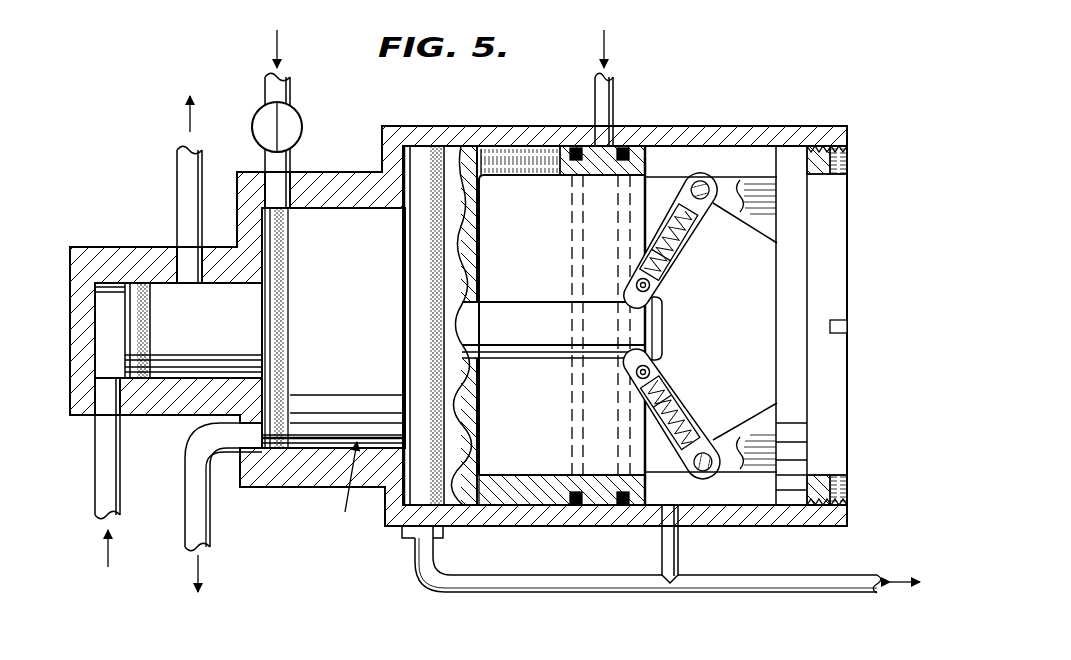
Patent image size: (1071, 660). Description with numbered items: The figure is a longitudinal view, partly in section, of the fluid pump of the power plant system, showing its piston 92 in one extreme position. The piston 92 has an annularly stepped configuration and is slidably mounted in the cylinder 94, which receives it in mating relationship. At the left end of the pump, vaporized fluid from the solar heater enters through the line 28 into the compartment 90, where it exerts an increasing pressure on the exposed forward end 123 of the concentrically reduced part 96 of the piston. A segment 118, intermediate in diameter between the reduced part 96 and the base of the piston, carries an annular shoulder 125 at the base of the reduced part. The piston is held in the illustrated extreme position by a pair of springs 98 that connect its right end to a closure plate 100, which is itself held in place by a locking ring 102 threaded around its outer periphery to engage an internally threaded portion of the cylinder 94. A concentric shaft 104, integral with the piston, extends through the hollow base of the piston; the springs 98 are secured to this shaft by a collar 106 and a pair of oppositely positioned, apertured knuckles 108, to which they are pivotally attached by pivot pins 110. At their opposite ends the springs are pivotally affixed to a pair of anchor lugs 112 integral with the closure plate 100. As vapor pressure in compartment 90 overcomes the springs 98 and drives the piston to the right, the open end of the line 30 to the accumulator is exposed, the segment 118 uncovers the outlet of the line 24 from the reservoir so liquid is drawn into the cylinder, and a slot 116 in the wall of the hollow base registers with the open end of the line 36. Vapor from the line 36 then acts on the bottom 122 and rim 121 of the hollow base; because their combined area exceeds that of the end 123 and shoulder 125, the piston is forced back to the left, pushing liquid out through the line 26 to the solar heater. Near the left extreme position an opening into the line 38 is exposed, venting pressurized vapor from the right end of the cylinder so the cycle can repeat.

The line 24 is at (278, 90).
The line 26 is at (194, 523).
The line 28 is at (102, 462).
The line 30 is at (182, 201).
The line 36 is at (603, 90).
The line 38 is at (767, 580).
The compartment 90 is at (107, 302).
The piston 92 is at (330, 489).
The cylinder 94 is at (704, 122).
The concentrically reduced part 96 is at (232, 338).
The springs 98 is at (686, 250).
The closure plate 100 is at (792, 332).
The locking ring 102 is at (845, 148).
The shaft 104 is at (560, 348).
The collar 106 is at (645, 322).
The knuckles 108 is at (660, 296).
The pivot pins 110 is at (640, 280).
The anchor lugs 112 is at (757, 220).
The slot 116 is at (522, 155).
The segment 118 is at (353, 220).
The rim 121 is at (646, 168).
The bottom 122 is at (479, 250).
The exposed forward end 123 is at (122, 337).
The annular shoulder 125 is at (400, 183).